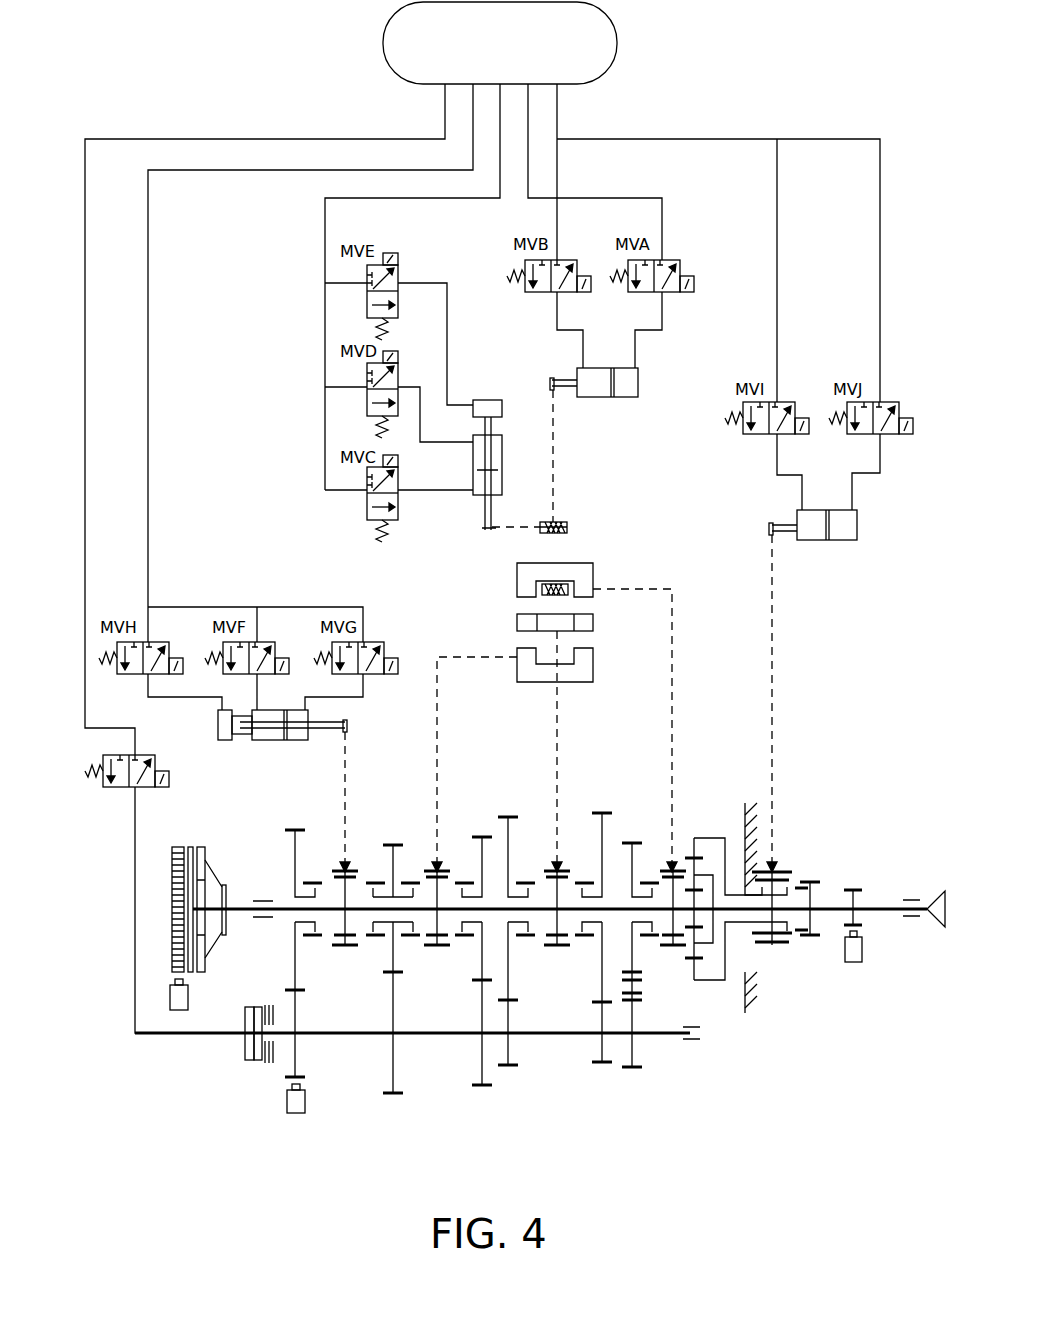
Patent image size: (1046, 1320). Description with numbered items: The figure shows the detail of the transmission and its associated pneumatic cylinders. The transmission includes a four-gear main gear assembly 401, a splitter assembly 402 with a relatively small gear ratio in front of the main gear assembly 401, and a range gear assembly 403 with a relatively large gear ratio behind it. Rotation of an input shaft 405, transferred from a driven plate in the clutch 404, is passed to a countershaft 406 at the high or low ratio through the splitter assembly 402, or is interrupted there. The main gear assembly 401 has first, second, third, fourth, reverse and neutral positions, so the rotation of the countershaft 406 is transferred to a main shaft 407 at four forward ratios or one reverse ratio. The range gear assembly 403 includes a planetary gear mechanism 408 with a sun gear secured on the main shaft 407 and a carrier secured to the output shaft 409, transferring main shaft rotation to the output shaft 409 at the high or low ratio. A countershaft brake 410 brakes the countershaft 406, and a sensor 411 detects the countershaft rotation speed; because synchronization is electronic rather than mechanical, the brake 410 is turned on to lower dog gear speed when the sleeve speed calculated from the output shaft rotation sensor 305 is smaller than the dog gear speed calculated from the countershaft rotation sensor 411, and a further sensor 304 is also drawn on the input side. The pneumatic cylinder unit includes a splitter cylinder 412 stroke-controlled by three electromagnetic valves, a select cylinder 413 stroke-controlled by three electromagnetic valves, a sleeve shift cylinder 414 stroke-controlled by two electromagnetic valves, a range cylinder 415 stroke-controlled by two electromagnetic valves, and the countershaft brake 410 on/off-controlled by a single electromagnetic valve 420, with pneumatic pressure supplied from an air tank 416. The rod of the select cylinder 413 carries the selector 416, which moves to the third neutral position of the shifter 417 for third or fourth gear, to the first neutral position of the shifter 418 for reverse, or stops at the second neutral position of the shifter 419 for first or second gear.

The input shaft speed sensor 304 is at (188, 998).
The output shaft rotation sensor 305 is at (858, 963).
The main gear assembly 401 is at (625, 828).
The splitter assembly 402 is at (376, 830).
The range gear assembly 403 is at (761, 896).
The clutch 404 is at (209, 838).
The input shaft 405 is at (290, 915).
The countershaft 406 is at (435, 1035).
The main shaft 407 is at (495, 914).
The planetary gear mechanism 408 is at (703, 982).
The output shaft 409 is at (823, 905).
The countershaft brake 410 is at (258, 1068).
The countershaft rotation speed sensor 411 is at (295, 1114).
The splitter cylinder 412 is at (249, 579).
The select cylinder 413 is at (477, 380).
The sleeve shift cylinder 414 is at (656, 408).
The range cylinder 415 is at (869, 550).
The air tank 416 is at (618, 31).
The shifter 417 is at (578, 684).
The shifter 418 is at (585, 560).
The shifter 419 is at (525, 612).
The electromagnetic valve 420 is at (112, 790).